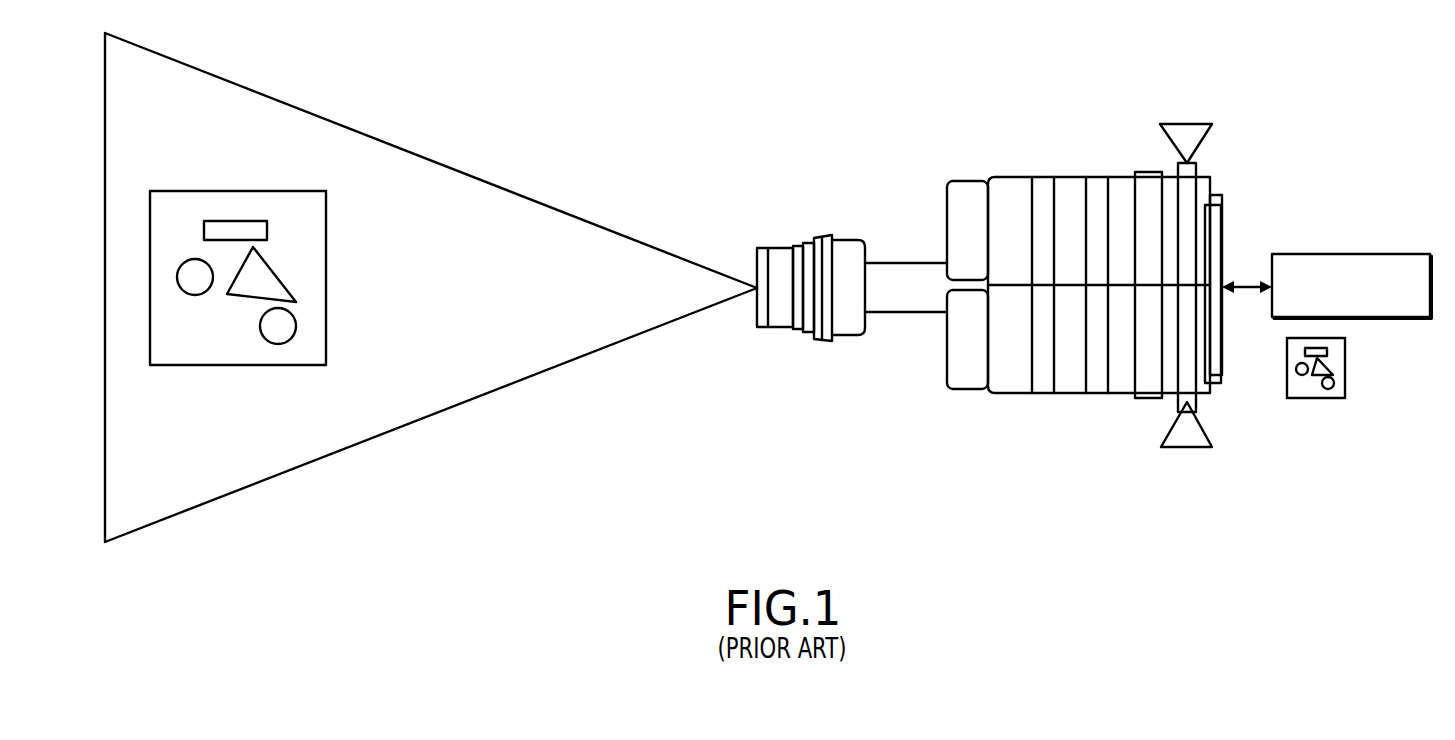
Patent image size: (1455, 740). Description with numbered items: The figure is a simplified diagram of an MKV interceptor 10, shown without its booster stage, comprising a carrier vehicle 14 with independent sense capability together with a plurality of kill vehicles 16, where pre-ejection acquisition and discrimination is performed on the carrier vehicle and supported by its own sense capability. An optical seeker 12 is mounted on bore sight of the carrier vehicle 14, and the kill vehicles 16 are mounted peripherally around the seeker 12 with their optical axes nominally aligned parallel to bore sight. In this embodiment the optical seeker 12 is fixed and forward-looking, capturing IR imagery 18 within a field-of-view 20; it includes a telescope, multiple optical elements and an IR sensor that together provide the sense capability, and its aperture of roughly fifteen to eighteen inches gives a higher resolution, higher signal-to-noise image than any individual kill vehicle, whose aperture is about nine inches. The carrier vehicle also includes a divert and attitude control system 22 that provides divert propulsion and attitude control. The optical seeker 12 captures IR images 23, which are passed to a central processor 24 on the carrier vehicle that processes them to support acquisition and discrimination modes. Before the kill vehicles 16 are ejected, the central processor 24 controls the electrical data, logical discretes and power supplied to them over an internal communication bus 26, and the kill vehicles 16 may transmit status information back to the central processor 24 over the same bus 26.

The MKV interceptor 10 is at (722, 92).
The optical seeker 12 is at (813, 237).
The carrier vehicle 14 is at (1140, 421).
The kill vehicles 16 is at (949, 184).
The IR imagery 18 is at (244, 190).
The field-of-view 20 is at (389, 137).
The divert and attitude control system 22 is at (1172, 123).
The IR images 23 is at (1317, 398).
The central processor 24 is at (1402, 253).
The internal communication bus 26 is at (1209, 218).